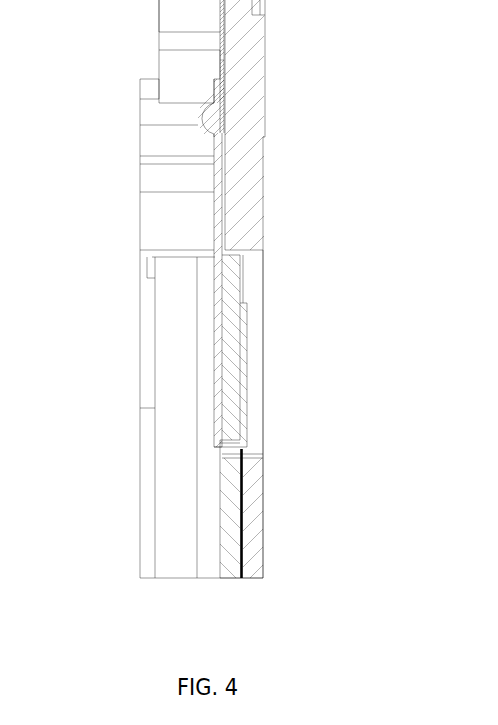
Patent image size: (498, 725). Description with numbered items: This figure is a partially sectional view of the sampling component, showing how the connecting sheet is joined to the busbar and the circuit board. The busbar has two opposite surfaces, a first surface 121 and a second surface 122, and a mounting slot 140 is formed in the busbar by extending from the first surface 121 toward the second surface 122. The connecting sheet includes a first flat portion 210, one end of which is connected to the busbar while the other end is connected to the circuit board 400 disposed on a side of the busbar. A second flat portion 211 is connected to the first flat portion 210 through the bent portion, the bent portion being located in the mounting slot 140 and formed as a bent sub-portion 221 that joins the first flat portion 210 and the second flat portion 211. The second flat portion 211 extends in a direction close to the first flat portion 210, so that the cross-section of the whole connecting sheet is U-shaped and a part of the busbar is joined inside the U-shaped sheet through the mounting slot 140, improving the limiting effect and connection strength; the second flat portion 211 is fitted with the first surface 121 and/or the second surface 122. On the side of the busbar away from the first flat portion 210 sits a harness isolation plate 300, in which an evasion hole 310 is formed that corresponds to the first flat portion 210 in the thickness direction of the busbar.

The circuit board 400 is at (167, 89).
The harness isolation plate 300 is at (240, 163).
The first flat portion 210 is at (214, 252).
The first surface 121 is at (215, 350).
The evasion hole 310 is at (255, 288).
The second surface 122 is at (242, 373).
The second flat portion 211 is at (242, 403).
The bent sub-portion 221 is at (228, 448).
The mounting slot 140 is at (243, 457).